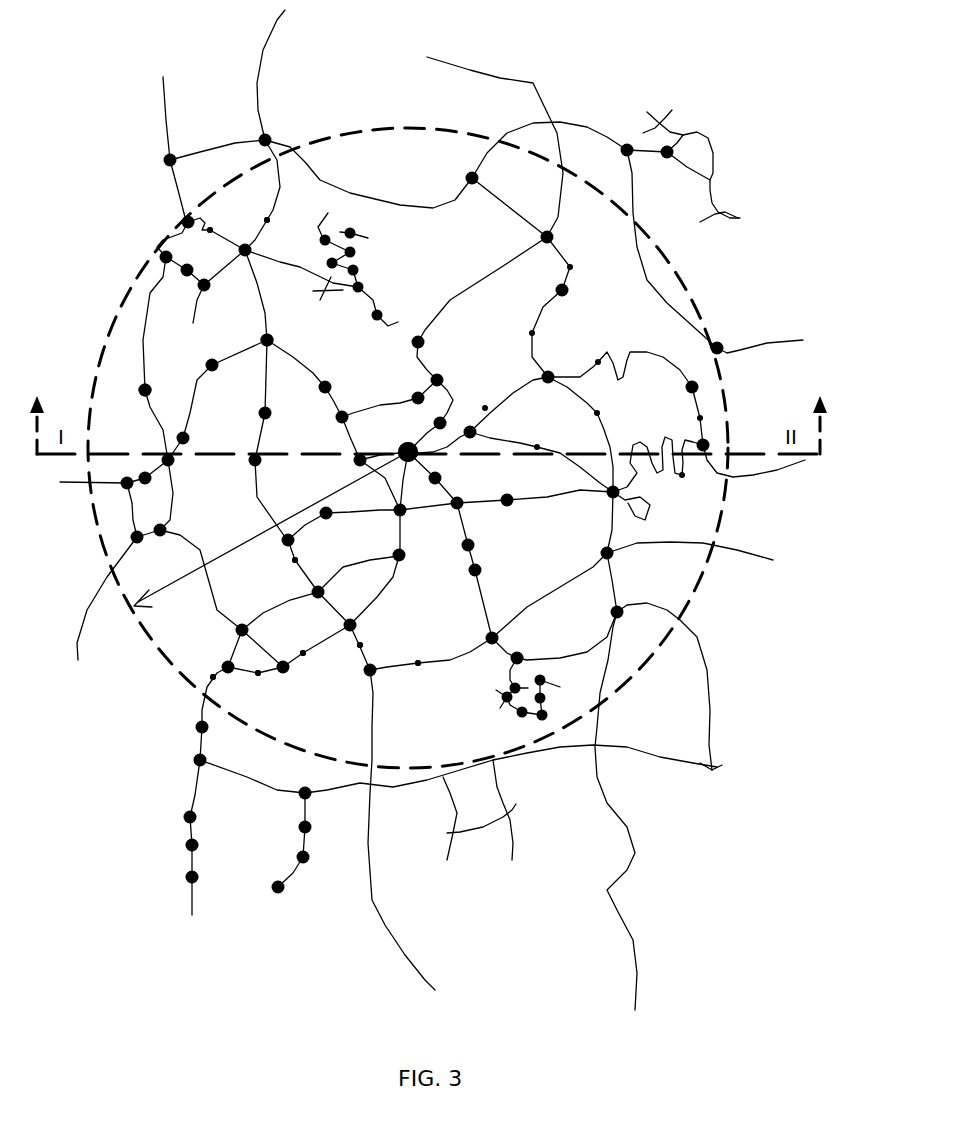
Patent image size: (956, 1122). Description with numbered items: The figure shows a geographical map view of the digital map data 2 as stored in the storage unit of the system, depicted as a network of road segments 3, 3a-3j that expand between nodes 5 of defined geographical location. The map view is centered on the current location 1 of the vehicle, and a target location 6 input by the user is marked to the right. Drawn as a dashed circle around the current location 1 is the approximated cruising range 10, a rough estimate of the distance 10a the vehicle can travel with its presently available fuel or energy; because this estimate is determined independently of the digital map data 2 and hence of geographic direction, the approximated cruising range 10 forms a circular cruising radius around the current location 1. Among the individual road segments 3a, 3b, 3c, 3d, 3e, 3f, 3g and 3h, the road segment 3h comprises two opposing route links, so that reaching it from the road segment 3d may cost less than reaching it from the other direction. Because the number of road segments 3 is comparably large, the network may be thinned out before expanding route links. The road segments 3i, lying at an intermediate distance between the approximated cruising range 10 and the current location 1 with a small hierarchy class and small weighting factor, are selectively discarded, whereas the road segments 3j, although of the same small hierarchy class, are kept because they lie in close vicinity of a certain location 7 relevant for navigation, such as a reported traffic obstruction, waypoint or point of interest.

The current location 1 is at (395, 446).
The digital map data 2 is at (100, 58).
The road segments 3 is at (267, 220).
The road segment 3a is at (485, 408).
The road segment 3b is at (598, 362).
The road segment 3c is at (700, 418).
The road segment 3d is at (532, 333).
The road segment 3e is at (597, 413).
The road segment 3f is at (537, 447).
The road segment 3g is at (682, 475).
The road segment 3h is at (570, 267).
The road segments 3i is at (350, 318).
The road segments 3j is at (480, 689).
The nodes 5 is at (267, 340).
The target location 6 is at (720, 434).
The certain location 7 is at (530, 647).
The approximated cruising range 10 is at (170, 660).
The distance 10a is at (214, 553).